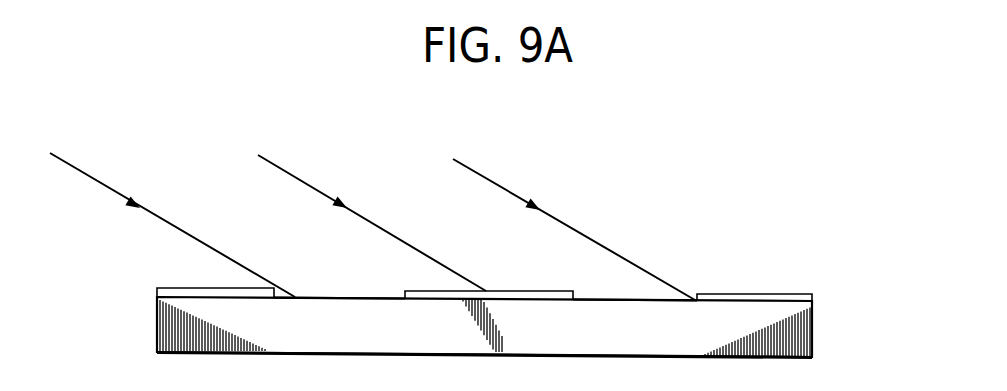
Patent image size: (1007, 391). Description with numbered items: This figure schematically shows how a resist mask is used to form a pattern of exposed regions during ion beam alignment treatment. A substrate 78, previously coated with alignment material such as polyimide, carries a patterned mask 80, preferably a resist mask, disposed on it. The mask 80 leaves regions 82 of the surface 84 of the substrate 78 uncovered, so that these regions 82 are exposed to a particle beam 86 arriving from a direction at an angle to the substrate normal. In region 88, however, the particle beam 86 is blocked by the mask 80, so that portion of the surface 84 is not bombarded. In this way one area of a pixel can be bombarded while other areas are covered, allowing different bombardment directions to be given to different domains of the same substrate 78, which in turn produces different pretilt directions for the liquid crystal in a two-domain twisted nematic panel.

The substrate 78 is at (812, 327).
The patterned mask 80 is at (812, 299).
The regions 82 is at (328, 292).
The surface 84 is at (205, 297).
The particle beam 86 is at (90, 175).
The region 88 is at (512, 286).